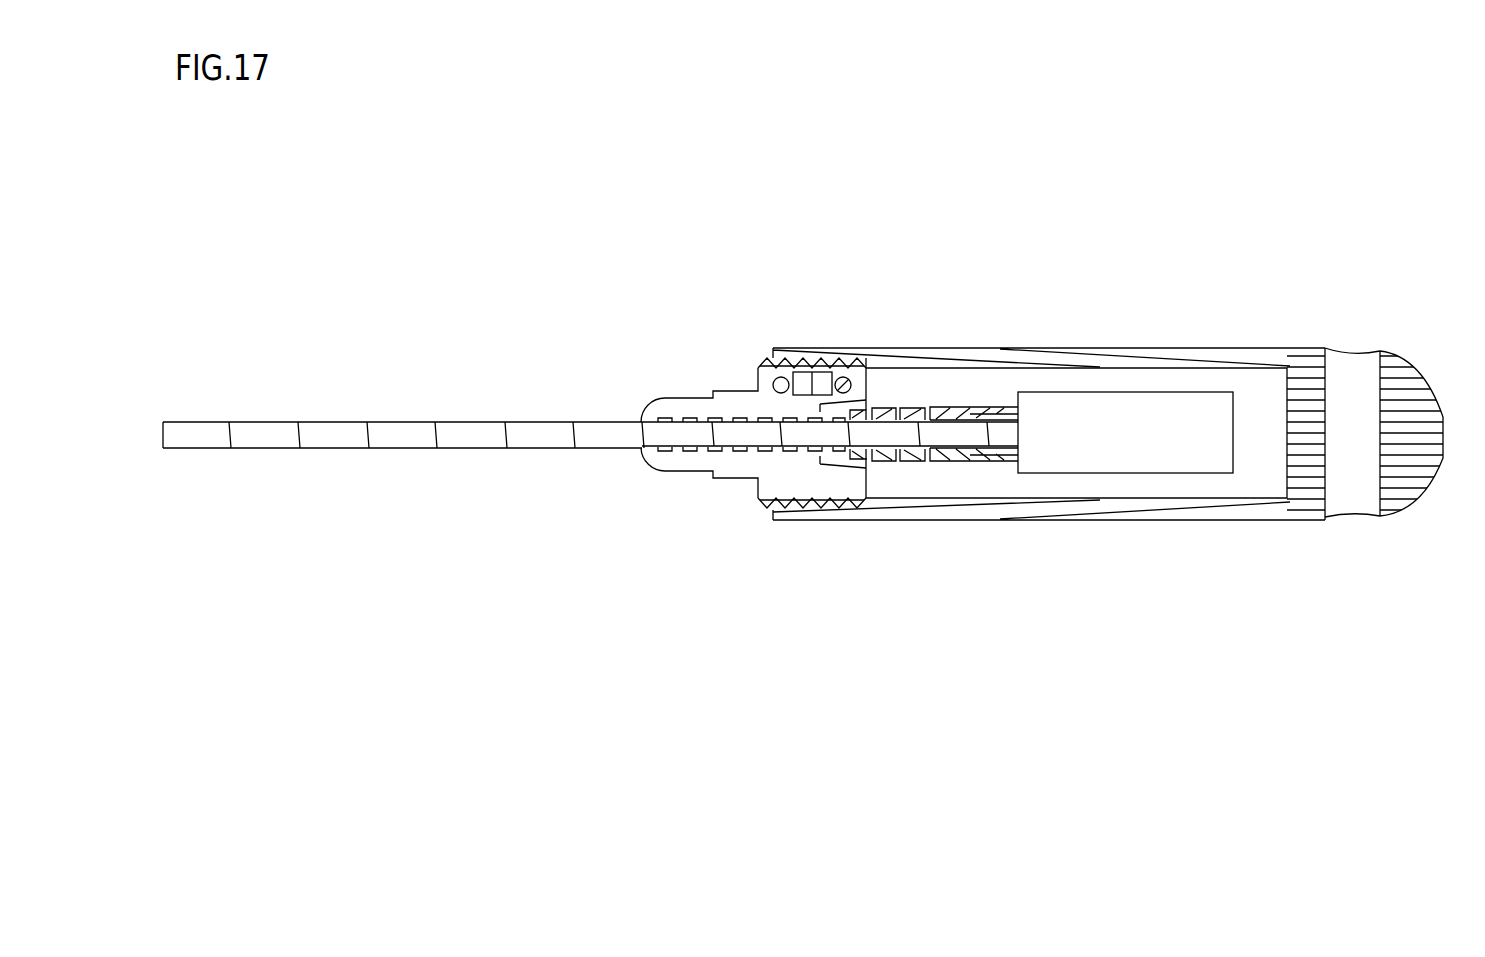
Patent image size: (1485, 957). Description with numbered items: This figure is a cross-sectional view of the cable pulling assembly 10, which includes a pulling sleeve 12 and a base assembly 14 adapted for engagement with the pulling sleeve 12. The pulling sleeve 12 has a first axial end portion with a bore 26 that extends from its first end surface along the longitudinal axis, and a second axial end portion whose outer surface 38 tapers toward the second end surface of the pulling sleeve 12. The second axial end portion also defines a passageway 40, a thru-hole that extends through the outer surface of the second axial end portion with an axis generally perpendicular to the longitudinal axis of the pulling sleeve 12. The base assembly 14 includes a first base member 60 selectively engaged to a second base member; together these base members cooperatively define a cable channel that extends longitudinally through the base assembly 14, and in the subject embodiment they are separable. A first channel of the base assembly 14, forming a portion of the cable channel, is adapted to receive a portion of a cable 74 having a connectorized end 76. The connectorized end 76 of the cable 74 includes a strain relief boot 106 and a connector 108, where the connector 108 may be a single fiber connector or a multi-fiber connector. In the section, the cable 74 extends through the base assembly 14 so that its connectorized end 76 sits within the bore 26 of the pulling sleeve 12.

The cable pulling assembly 10 is at (720, 273).
The pulling sleeve 12 is at (1152, 330).
The base assembly 14 is at (703, 481).
The bore 26 is at (1013, 500).
The outer surface 38 is at (1413, 372).
The passageway 40 is at (1325, 492).
The first base member 60 is at (737, 378).
The cable 74 is at (465, 450).
The connectorized end 76 is at (975, 392).
The strain relief boot 106 is at (913, 406).
The connector 108 is at (1194, 391).